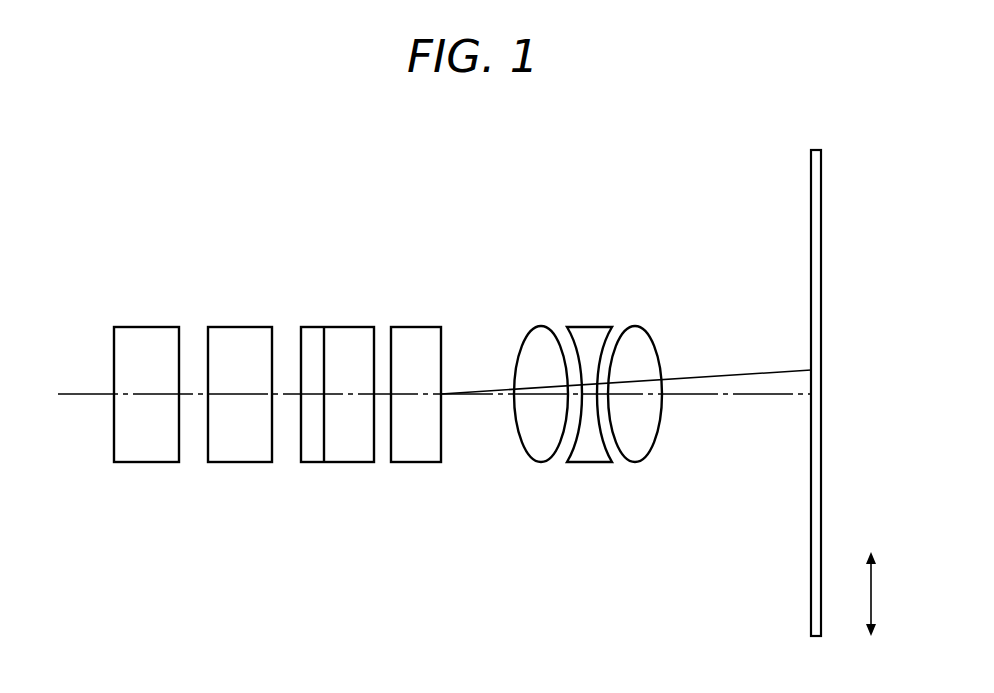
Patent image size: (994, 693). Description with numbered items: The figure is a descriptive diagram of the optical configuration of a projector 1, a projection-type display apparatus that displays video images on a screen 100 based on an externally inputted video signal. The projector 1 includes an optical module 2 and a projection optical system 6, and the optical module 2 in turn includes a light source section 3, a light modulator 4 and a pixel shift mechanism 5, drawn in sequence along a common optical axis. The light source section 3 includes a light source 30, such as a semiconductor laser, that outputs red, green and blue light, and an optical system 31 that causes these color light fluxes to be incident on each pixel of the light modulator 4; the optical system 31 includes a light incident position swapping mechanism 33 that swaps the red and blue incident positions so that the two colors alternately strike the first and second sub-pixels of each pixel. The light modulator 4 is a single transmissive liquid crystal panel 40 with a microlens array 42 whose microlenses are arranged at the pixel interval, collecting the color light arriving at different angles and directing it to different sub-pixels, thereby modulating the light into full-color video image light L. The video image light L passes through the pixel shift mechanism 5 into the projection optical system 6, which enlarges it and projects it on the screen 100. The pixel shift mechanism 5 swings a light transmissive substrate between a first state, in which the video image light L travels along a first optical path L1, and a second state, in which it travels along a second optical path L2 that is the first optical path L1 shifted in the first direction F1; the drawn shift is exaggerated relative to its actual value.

The projector 1 is at (90, 252).
The optical module 2 is at (278, 441).
The light source section 3 is at (198, 451).
The light source 30 is at (150, 462).
The light incident position swapping mechanism 33 is at (236, 431).
The optical system 31 is at (240, 394).
The light modulator 4 is at (341, 417).
The liquid crystal panel 40 is at (337, 394).
The microlens array 42 is at (311, 327).
The pixel shift mechanism 5 is at (416, 451).
The projection optical system 6 is at (660, 487).
The screen 100 is at (811, 190).
The video image light L is at (434, 390).
The first optical path L1 is at (733, 398).
The second optical path L2 is at (730, 372).
The first direction F1 is at (887, 594).